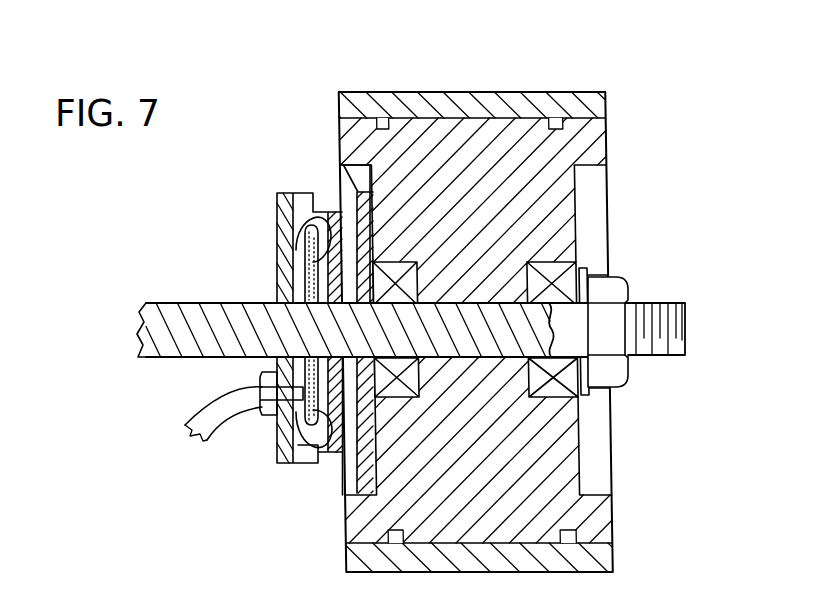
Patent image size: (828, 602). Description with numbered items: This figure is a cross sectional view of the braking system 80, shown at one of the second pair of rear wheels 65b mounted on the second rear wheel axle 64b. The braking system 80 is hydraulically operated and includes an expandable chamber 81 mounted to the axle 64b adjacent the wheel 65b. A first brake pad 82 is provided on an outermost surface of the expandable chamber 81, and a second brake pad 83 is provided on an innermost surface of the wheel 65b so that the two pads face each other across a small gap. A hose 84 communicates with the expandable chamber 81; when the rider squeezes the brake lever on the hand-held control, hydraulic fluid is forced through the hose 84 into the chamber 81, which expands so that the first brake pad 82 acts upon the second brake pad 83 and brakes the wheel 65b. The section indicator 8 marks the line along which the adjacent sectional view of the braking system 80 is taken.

The second pair of rear wheels 65b is at (540, 215).
The second rear wheel axle 64b is at (197, 323).
The second brake pad 83 is at (340, 165).
The braking system 80 is at (283, 148).
The first brake pad 82 is at (340, 472).
The expandable chamber 81 is at (310, 463).
The hose 84 is at (227, 407).
The section line 8 is at (346, 417).